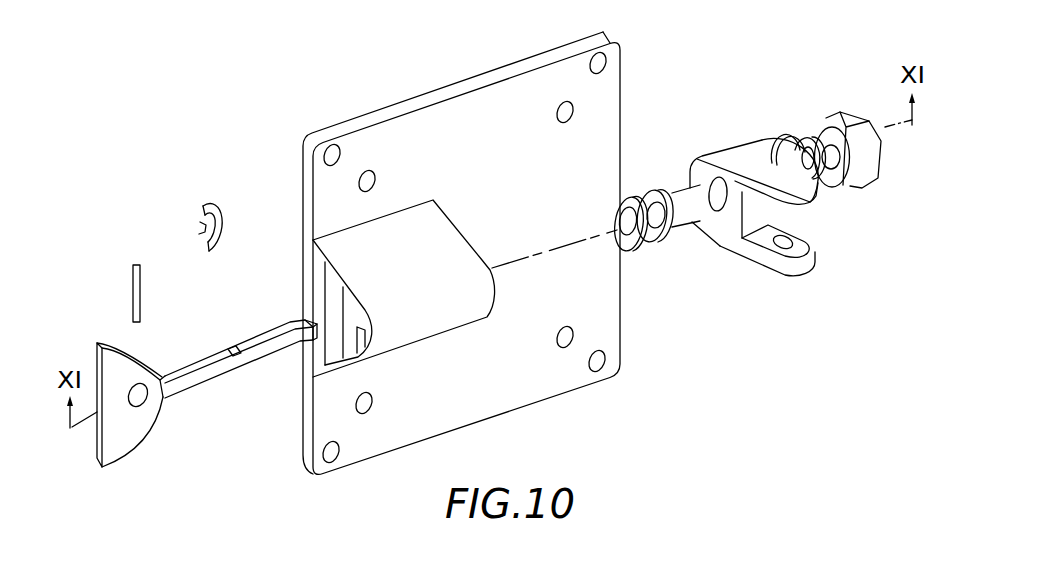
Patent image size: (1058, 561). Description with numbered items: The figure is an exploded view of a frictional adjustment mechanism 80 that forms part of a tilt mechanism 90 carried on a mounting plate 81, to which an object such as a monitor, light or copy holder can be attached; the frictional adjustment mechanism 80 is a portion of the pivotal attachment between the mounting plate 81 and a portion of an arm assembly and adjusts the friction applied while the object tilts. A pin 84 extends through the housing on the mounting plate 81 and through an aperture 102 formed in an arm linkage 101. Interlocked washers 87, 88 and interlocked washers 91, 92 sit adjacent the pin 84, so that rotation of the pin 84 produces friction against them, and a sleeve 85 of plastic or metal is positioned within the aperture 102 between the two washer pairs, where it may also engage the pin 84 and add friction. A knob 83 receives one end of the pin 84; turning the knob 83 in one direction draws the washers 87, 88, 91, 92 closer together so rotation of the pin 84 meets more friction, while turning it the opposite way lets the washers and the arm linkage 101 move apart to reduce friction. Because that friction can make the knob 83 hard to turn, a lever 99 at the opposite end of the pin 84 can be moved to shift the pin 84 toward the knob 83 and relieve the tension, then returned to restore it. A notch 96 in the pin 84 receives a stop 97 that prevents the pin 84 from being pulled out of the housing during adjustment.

The frictional adjustment mechanism 80 is at (661, 148).
The mounting plate 81 is at (428, 92).
The knob 83 is at (870, 178).
The pin 84 is at (215, 376).
The sleeve 85 is at (688, 223).
The washer 87 is at (617, 198).
The washer 88 is at (662, 248).
The tilt mechanism 90 is at (431, 362).
The washer 91 is at (788, 142).
The washer 92 is at (800, 137).
The notch 96 is at (231, 351).
The stop 97 is at (212, 203).
The lever 99 is at (121, 448).
The arm linkage 101 is at (795, 229).
The aperture 102 is at (721, 204).